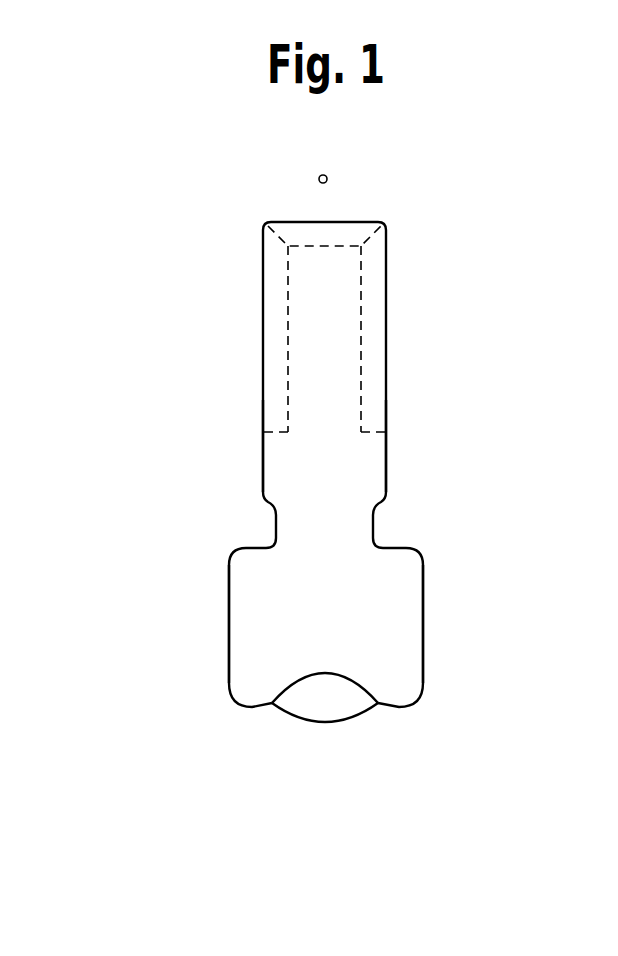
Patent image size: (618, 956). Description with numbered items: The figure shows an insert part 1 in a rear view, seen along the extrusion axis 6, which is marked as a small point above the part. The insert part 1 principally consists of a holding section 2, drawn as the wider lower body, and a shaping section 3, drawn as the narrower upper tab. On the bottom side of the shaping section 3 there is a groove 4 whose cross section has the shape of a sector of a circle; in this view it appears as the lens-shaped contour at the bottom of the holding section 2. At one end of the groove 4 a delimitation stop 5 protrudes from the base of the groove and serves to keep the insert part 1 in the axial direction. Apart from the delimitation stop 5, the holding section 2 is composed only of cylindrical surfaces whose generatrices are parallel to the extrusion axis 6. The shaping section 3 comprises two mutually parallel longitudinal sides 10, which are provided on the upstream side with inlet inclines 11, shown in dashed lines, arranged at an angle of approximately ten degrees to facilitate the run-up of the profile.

The insert part 1 is at (472, 222).
The holding section 2 is at (210, 621).
The shaping section 3 is at (250, 346).
The groove 4 is at (312, 680).
The delimitation stop 5 is at (348, 723).
The extrusion axis 6 is at (328, 177).
The longitudinal sides 10 is at (262, 389).
The inlet inclines 11 is at (387, 299).